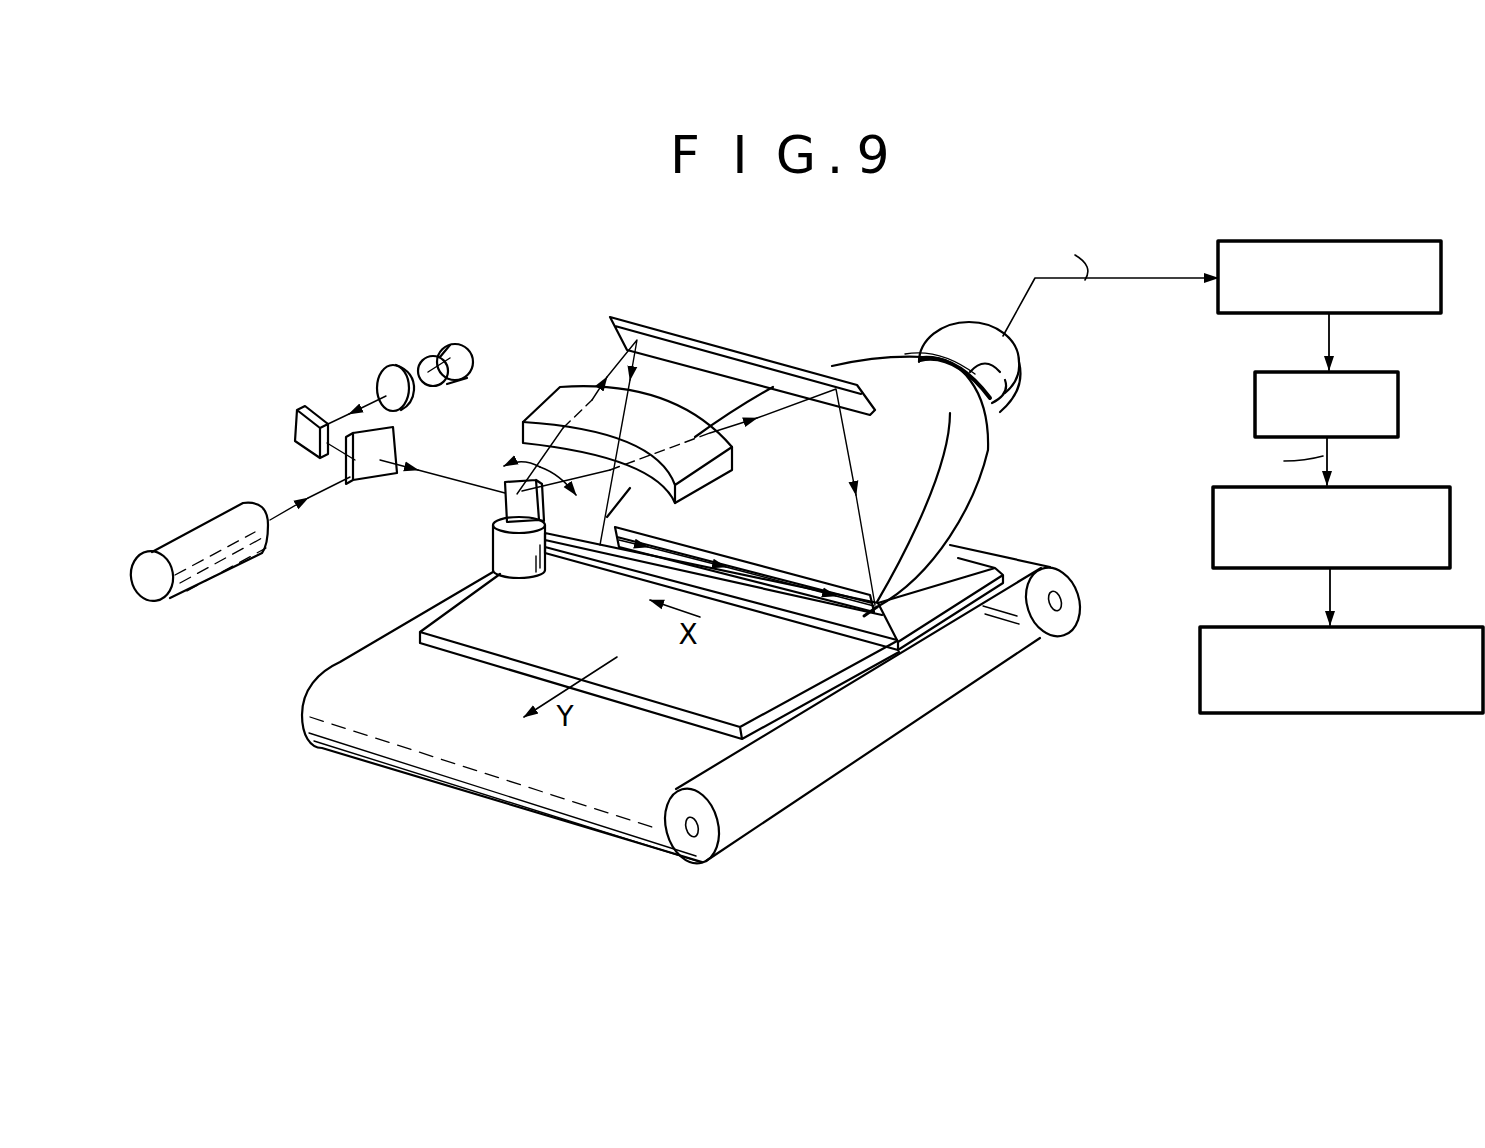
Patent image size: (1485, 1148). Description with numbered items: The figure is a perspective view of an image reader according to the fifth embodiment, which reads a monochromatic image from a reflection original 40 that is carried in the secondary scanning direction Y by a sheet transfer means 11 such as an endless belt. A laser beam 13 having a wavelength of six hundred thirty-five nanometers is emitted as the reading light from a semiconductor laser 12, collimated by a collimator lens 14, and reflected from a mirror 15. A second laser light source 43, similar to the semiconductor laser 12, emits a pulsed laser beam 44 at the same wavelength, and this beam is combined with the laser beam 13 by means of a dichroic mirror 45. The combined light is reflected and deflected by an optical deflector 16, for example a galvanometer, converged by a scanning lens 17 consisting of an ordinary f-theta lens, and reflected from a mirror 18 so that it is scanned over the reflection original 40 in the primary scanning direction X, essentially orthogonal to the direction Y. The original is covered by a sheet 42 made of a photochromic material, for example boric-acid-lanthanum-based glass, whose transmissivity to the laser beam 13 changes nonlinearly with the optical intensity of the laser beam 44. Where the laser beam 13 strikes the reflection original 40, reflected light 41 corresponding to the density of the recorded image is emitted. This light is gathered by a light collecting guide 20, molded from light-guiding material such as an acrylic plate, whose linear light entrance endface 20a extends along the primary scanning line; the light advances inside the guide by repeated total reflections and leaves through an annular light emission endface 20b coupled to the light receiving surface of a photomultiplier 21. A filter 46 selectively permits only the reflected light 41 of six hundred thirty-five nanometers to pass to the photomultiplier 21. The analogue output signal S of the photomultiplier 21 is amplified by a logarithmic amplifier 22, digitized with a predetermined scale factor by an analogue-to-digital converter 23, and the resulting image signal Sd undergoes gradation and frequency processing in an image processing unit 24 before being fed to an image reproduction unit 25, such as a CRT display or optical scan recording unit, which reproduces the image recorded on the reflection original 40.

The sheet transfer means 11 is at (347, 683).
The semiconductor laser 12 is at (445, 347).
The laser beam 13 is at (353, 403).
The collimator lens 14 is at (394, 366).
The mirror 15 is at (300, 410).
The optical deflector 16 is at (500, 511).
The scanning lens 17 is at (560, 397).
The mirror 18 is at (613, 317).
The light collecting guide 20 is at (843, 345).
The light entrance endface 20a is at (778, 587).
The light emission endface 20b is at (943, 347).
The photomultiplier 21 is at (965, 333).
The logarithmic amplifier 22 is at (1363, 241).
The analogue-to-digital converter 23 is at (1283, 372).
The image processing unit 24 is at (1213, 536).
The image reproduction unit 25 is at (1200, 676).
The reflection original 40 is at (473, 623).
The reflected light 41 is at (807, 603).
The sheet 42 is at (940, 643).
The laser light source 43 is at (196, 534).
The laser beam 44 is at (277, 503).
The dichroic mirror 45 is at (397, 455).
The filter 46 is at (1000, 391).